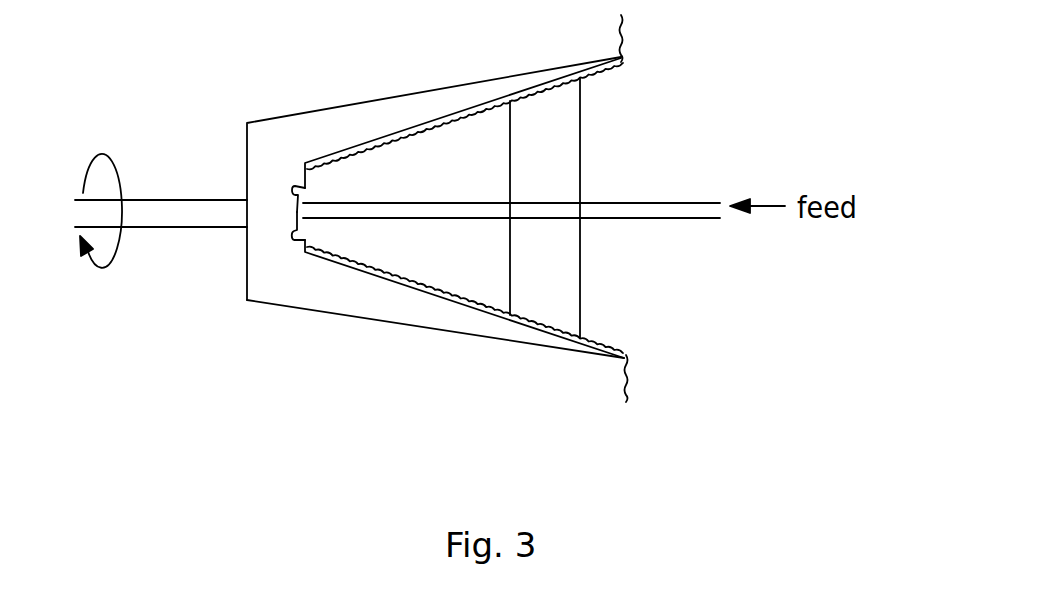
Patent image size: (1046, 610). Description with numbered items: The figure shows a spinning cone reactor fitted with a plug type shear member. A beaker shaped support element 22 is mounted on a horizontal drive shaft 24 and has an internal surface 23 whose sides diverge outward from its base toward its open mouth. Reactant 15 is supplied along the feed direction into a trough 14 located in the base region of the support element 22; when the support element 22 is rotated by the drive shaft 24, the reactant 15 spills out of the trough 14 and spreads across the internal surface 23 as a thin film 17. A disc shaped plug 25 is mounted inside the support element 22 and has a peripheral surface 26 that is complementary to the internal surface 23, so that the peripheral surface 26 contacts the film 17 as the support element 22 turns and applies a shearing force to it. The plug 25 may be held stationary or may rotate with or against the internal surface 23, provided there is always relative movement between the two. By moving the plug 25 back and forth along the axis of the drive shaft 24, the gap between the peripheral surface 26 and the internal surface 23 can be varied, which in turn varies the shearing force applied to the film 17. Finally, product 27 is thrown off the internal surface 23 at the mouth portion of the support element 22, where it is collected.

The trough 14 is at (293, 207).
The reactant 15 is at (294, 243).
The film 17 is at (400, 278).
The support element 22 is at (337, 307).
The internal surface 23 is at (410, 297).
The drive shaft 24 is at (137, 228).
The plug 25 is at (562, 275).
The peripheral surface 26 is at (540, 331).
The product 27 is at (630, 380).